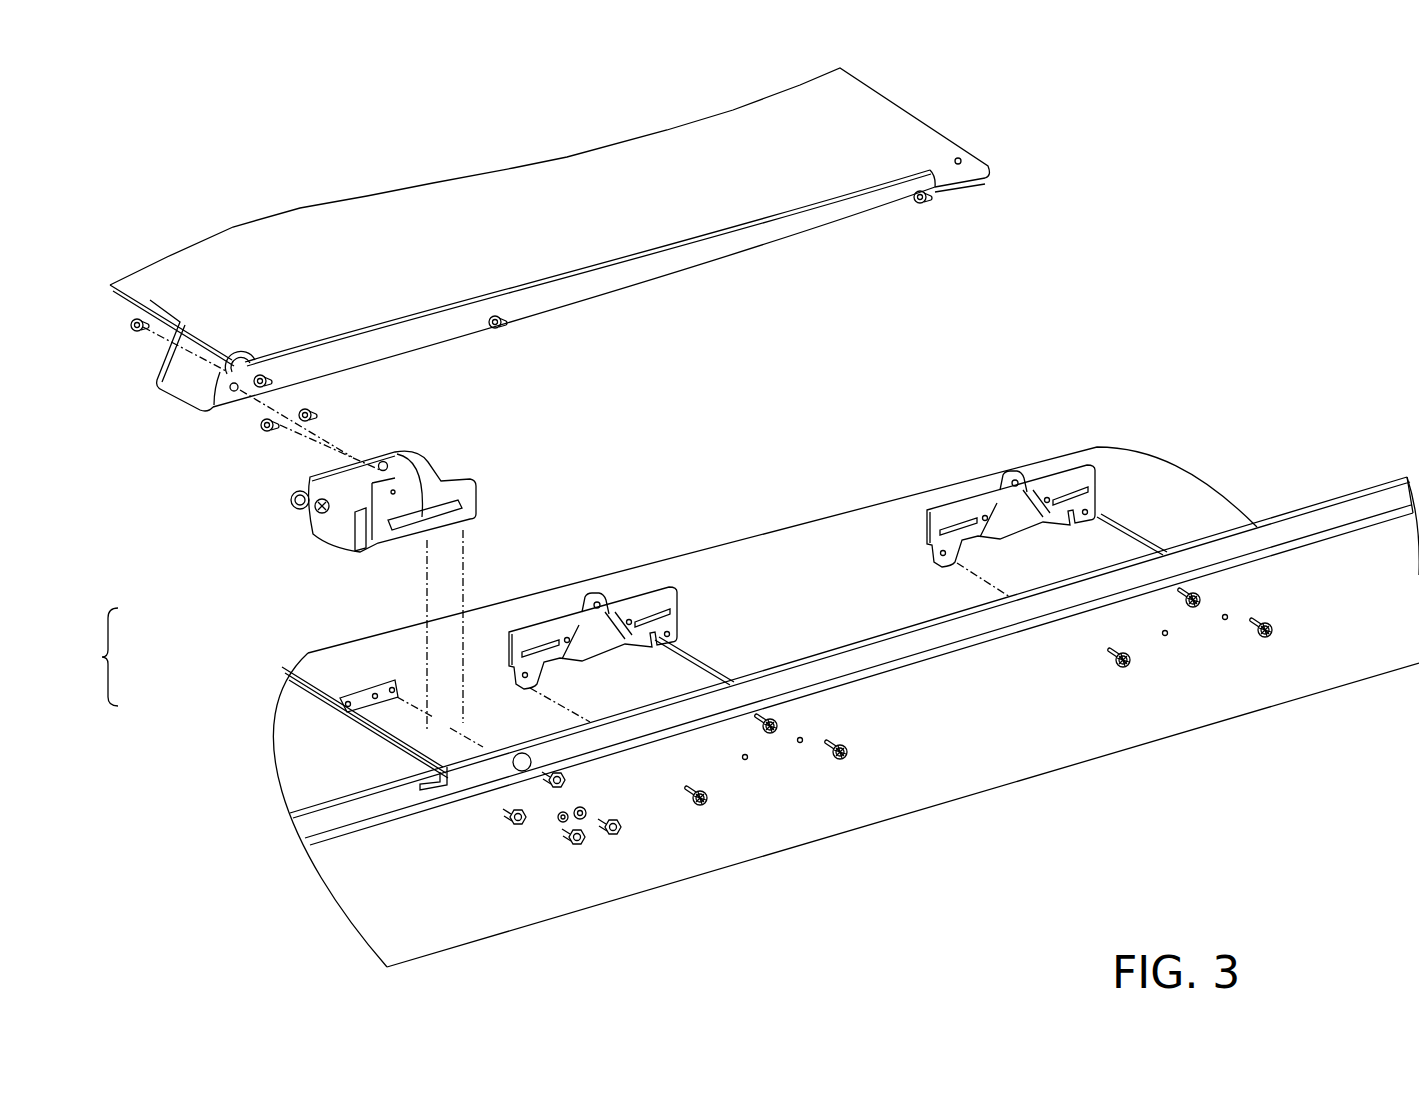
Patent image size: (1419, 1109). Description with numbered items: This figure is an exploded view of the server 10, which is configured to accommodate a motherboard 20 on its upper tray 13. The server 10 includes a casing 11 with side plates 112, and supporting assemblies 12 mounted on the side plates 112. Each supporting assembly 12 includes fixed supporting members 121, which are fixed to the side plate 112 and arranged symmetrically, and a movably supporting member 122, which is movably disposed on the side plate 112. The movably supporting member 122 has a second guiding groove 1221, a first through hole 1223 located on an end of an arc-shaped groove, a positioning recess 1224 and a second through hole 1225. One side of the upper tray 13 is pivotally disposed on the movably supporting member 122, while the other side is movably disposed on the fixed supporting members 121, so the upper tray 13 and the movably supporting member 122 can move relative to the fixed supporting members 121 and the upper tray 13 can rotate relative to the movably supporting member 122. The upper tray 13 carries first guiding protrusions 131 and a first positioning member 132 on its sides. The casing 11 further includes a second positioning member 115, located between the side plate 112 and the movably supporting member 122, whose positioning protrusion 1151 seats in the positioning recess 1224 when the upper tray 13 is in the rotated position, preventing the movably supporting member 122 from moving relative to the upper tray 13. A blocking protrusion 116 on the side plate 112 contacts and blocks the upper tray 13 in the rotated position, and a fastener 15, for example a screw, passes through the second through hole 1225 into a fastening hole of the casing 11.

The server 10 is at (154, 97).
The motherboard 20 is at (583, 210).
The upper tray 13 is at (596, 318).
The first guiding protrusion 131 is at (925, 203).
The first positioning member 132 is at (241, 352).
The casing 11 is at (798, 673).
The side plate 112 is at (1068, 745).
The second positioning member 115 is at (330, 687).
The positioning protrusion 1151 is at (347, 712).
The blocking protrusion 116 is at (515, 752).
The supporting assembly 12 is at (117, 657).
The fixed supporting member 121 is at (630, 591).
The movably supporting member 122 is at (373, 580).
The second guiding groove 1221 is at (440, 524).
The first through hole 1223 is at (403, 468).
The positioning recess 1224 is at (368, 556).
The second through hole 1225 is at (322, 522).
The fastener 15 is at (300, 524).